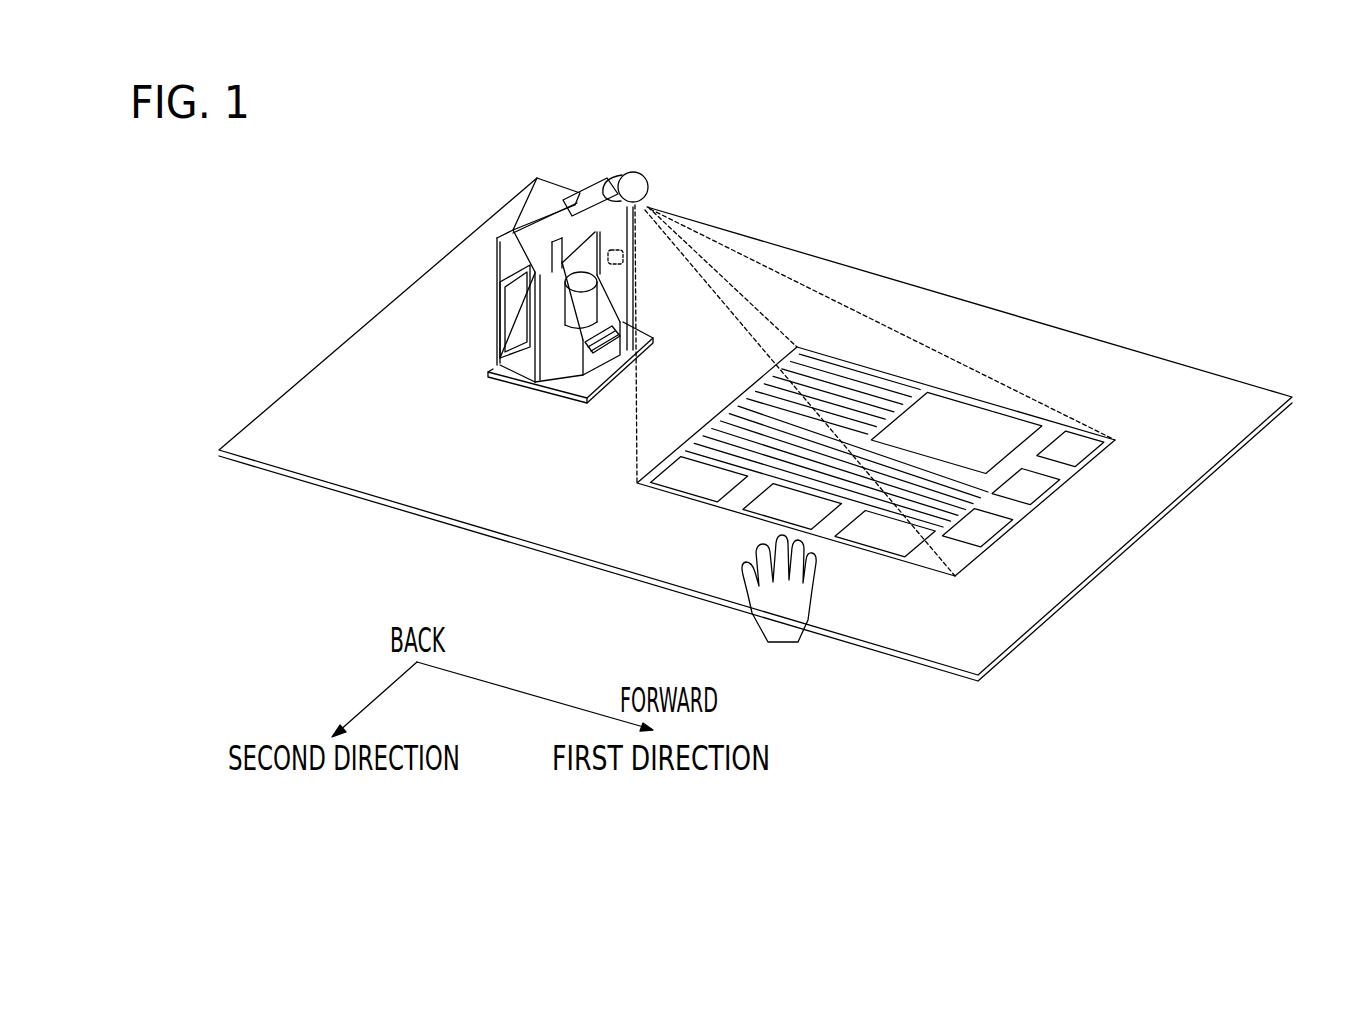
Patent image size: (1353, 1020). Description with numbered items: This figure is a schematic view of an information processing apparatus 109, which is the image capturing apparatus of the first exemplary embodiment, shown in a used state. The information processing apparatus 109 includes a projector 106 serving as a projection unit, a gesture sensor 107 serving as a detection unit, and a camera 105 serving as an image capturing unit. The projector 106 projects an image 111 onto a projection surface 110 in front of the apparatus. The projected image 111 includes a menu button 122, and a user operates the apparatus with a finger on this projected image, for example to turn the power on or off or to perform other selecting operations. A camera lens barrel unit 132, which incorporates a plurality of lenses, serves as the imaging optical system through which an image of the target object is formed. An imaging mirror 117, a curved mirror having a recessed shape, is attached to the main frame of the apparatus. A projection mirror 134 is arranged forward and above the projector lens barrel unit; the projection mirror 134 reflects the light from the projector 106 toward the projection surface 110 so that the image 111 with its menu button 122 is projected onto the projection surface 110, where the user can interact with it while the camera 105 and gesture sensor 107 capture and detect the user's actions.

The camera 105 is at (599, 364).
The projector 106 is at (623, 258).
The gesture sensor 107 is at (594, 192).
The information processing apparatus 109 is at (515, 290).
The projection surface 110 is at (1072, 350).
The image 111 is at (876, 441).
The imaging mirror 117 is at (538, 196).
The menu button 122 is at (702, 488).
The camera lens barrel unit 132 is at (580, 299).
The projection mirror 134 is at (641, 160).